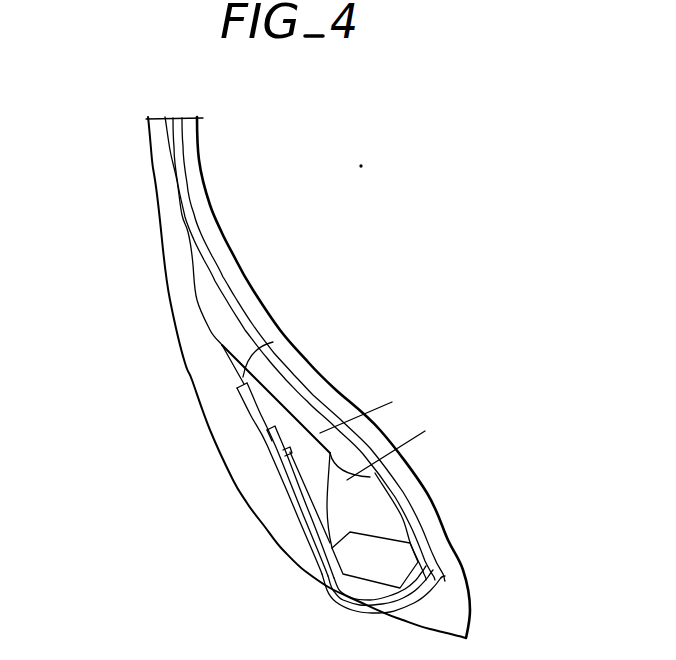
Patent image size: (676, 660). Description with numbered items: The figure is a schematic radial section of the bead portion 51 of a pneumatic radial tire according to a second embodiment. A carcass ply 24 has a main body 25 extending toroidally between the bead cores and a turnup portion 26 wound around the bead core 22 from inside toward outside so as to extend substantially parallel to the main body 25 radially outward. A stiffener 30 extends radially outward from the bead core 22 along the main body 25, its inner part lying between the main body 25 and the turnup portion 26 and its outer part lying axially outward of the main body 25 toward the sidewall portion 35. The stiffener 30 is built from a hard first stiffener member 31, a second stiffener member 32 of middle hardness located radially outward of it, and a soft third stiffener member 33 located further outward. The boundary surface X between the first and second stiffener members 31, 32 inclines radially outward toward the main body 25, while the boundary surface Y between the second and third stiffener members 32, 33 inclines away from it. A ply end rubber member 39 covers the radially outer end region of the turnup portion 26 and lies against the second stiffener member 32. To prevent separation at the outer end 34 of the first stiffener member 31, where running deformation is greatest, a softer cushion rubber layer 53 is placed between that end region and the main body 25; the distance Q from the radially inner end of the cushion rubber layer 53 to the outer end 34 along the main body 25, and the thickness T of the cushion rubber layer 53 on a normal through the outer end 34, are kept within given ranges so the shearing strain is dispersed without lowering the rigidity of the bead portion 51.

The bead core 22 is at (400, 563).
The carcass ply 24 is at (210, 258).
The main body 25 is at (397, 510).
The turnup portion 26 is at (313, 530).
The stiffener 30 is at (213, 345).
The first stiffener member 31 is at (393, 528).
The second stiffener member 32 is at (308, 490).
The third stiffener member 33 is at (220, 313).
The outer end of the first stiffener member 34 is at (330, 457).
The sidewall portion 35 is at (156, 212).
The ply end rubber member 39 is at (250, 410).
The bead portion 51 is at (419, 471).
The cushion rubber layer 53 is at (292, 442).
The distance Q is at (389, 408).
The thickness T is at (378, 489).
The boundary surface X is at (357, 557).
The boundary surface Y is at (276, 339).